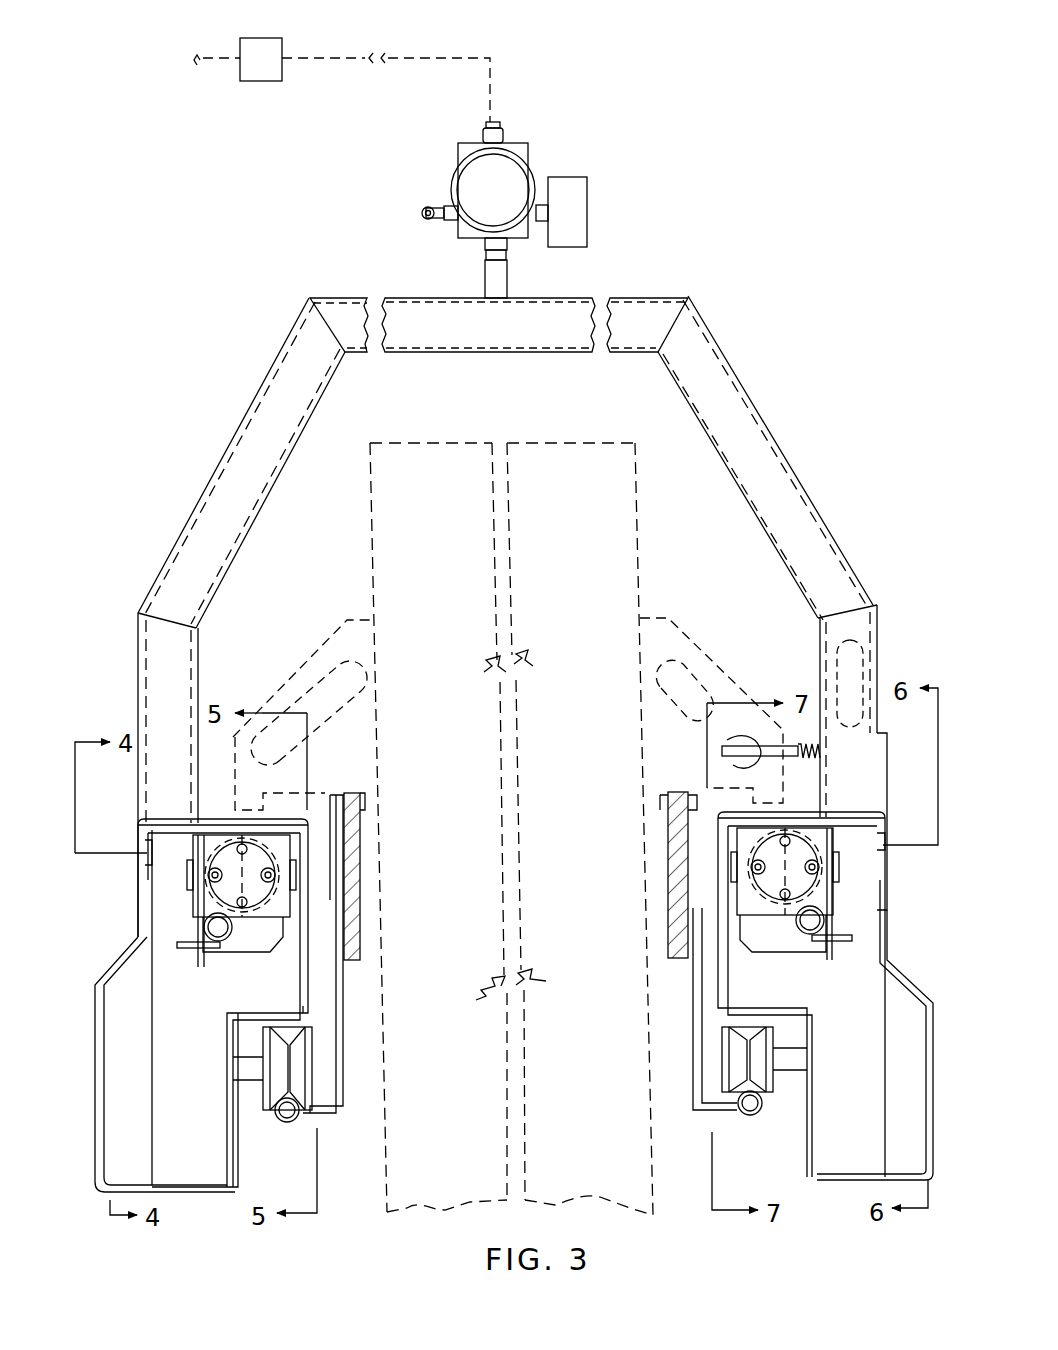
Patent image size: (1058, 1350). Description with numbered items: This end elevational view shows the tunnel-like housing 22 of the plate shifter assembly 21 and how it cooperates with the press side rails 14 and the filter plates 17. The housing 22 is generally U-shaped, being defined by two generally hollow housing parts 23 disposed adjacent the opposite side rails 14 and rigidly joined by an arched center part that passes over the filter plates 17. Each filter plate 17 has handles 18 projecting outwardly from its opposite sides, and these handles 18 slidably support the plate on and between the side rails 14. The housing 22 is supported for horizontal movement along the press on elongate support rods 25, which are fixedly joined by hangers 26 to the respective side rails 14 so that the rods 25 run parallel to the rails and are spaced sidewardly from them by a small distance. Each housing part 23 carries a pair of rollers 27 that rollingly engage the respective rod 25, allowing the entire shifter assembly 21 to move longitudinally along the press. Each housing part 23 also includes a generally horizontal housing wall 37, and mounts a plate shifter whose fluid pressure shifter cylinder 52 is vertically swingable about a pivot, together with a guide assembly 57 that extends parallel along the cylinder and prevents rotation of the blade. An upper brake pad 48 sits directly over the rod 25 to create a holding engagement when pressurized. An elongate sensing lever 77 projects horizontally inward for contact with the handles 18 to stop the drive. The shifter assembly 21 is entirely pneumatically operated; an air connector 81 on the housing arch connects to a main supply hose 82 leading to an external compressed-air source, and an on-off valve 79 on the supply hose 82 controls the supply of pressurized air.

The side rails 14 is at (355, 878).
The filter plates 17 is at (400, 522).
The handles 18 is at (307, 667).
The plate shifter assembly 21 is at (208, 370).
The tunnel-like housing 22 is at (742, 367).
The housing parts 23 is at (110, 968).
The support rods 25 is at (287, 1115).
The hangers 26 is at (340, 1010).
The rollers 27 is at (290, 1063).
The housing wall 37 is at (278, 1013).
The upper brake pad 48 is at (238, 1170).
The shifter cylinder 52 is at (205, 900).
The guide assembly 57 is at (230, 945).
The sensing lever 77 is at (735, 745).
The on-off valve 79 is at (258, 65).
The air connector 81 is at (520, 146).
The main supply hose 82 is at (432, 58).